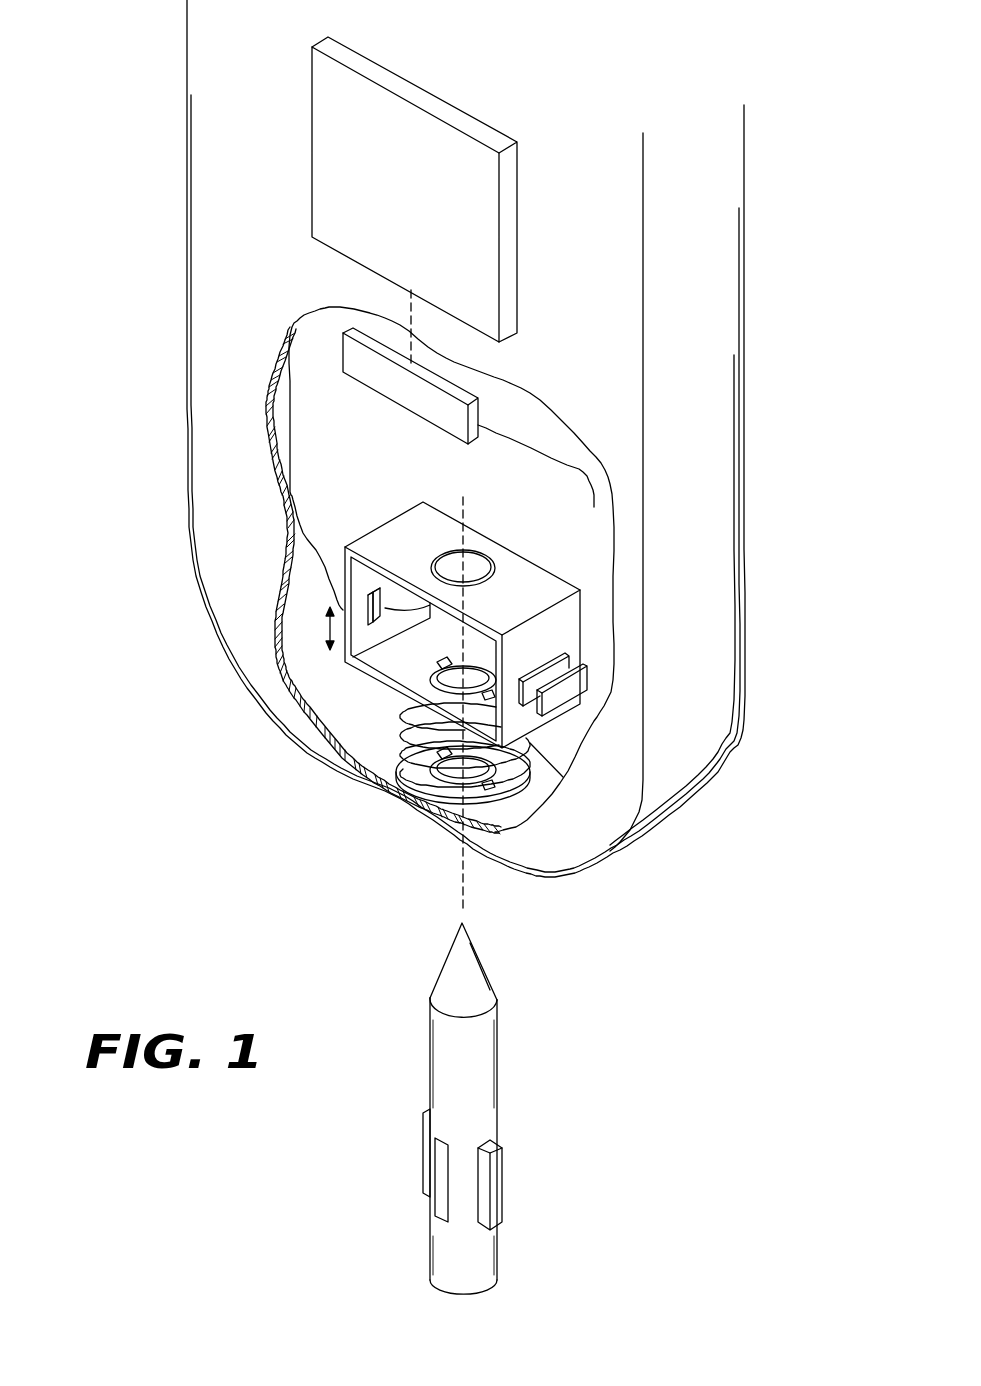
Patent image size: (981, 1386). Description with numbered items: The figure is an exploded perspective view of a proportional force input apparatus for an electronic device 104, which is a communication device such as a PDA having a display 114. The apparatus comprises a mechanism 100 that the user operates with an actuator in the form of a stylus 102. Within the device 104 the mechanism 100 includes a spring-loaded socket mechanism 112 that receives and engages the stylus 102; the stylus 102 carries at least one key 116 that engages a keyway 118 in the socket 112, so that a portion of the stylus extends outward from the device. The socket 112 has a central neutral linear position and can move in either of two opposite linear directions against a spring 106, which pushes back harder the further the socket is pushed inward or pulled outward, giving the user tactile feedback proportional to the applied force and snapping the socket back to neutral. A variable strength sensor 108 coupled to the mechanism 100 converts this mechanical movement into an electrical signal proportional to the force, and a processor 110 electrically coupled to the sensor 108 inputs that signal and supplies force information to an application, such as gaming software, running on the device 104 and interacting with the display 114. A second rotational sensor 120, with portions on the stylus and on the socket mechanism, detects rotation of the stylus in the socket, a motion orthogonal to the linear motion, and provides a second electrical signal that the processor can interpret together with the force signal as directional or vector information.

The mechanism 100 is at (259, 783).
The stylus 102 is at (485, 1060).
The electronic device 104 is at (235, 633).
The spring 106 is at (405, 775).
The variable strength sensor 108 is at (550, 673).
The processor 110 is at (403, 403).
The spring-loaded socket mechanism 112 is at (520, 565).
The display 114 is at (316, 138).
The key 116 is at (423, 1147).
The keyway 118 is at (492, 642).
The second rotational sensor 120 is at (367, 595).